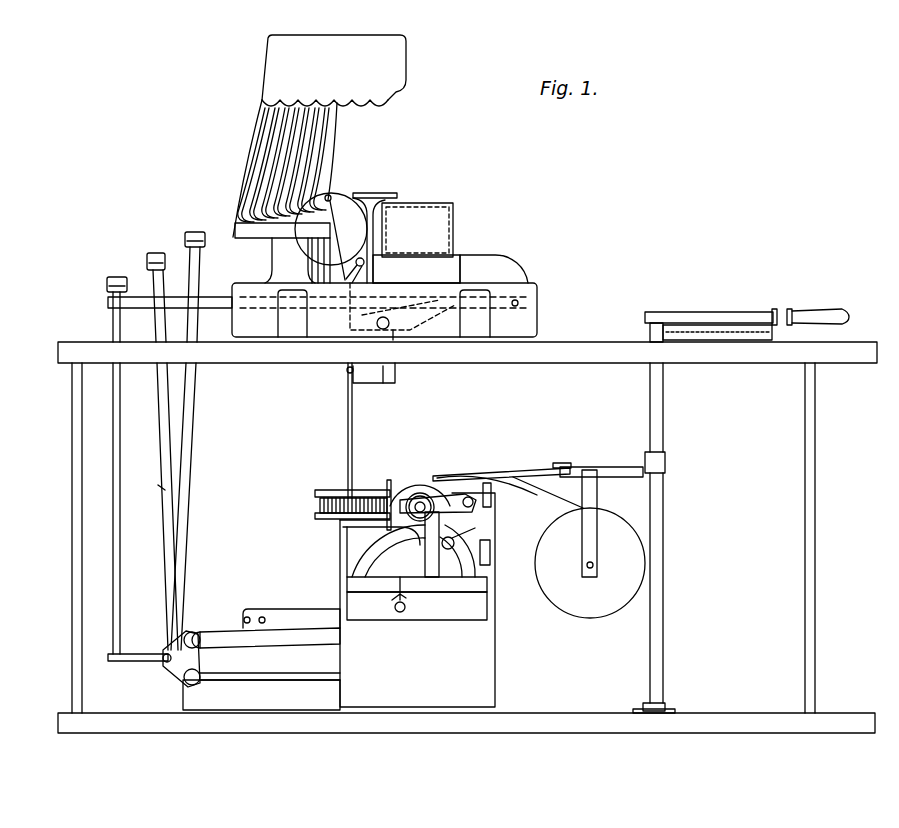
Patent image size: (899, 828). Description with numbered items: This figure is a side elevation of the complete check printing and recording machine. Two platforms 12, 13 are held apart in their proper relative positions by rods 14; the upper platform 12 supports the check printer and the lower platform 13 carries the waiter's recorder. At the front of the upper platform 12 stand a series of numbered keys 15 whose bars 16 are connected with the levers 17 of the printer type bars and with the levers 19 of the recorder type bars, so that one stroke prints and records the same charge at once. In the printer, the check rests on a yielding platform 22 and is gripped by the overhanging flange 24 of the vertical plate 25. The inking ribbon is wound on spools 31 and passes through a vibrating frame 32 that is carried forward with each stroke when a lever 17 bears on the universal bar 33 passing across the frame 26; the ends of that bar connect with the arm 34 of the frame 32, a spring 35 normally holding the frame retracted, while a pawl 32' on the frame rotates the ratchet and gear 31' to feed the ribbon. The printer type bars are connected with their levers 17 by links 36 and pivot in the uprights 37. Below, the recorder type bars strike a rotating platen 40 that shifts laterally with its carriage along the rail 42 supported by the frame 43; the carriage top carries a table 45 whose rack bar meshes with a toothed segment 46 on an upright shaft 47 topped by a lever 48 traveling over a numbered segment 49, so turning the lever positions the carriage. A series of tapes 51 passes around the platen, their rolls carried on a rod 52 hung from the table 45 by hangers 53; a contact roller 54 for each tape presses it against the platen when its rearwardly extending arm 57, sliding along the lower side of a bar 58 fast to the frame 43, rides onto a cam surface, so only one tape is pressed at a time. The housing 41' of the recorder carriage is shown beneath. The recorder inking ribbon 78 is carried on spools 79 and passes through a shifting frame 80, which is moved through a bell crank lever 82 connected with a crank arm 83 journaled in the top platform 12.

The upper platform 12 is at (62, 349).
The lower platform 13 is at (60, 721).
The rods 14 is at (824, 545).
The keys 15 is at (156, 441).
The key bars 16 is at (150, 480).
The levers 17 is at (209, 300).
The levers 19 is at (154, 659).
The yielding platform 22 is at (453, 207).
The overhanging flange 24 is at (393, 204).
The vertical plate 25 is at (386, 231).
The frame 26 is at (516, 282).
The spools 31 is at (331, 229).
The ratchet and gear 31' is at (328, 256).
The vibrating frame 32 is at (375, 182).
The pawl 32' is at (343, 297).
The universal bar 33 is at (440, 308).
The arm 34 is at (400, 310).
The spring 35 is at (393, 338).
The links 36 is at (330, 262).
The uprights 37 is at (255, 213).
The rotating platen 40 is at (433, 518).
The frame bar 41' is at (417, 598).
The rail 42 is at (395, 607).
The frame 43 is at (433, 600).
The table 45 is at (508, 480).
The toothed segment 46 is at (609, 460).
The upright shaft 47 is at (664, 421).
The lever 48 is at (700, 318).
The numbered segment 49 is at (732, 336).
The tapes 51 is at (590, 574).
The rod 52 is at (597, 566).
The hangers 53 is at (608, 523).
The contact roller 54 is at (418, 580).
The arm 57 is at (488, 560).
The bar 58 is at (459, 531).
The inking ribbon 78 is at (318, 506).
The spools 79 is at (320, 496).
The shifting frame 80 is at (387, 483).
The bell crank lever 82 is at (346, 389).
The crank arm 83 is at (395, 381).